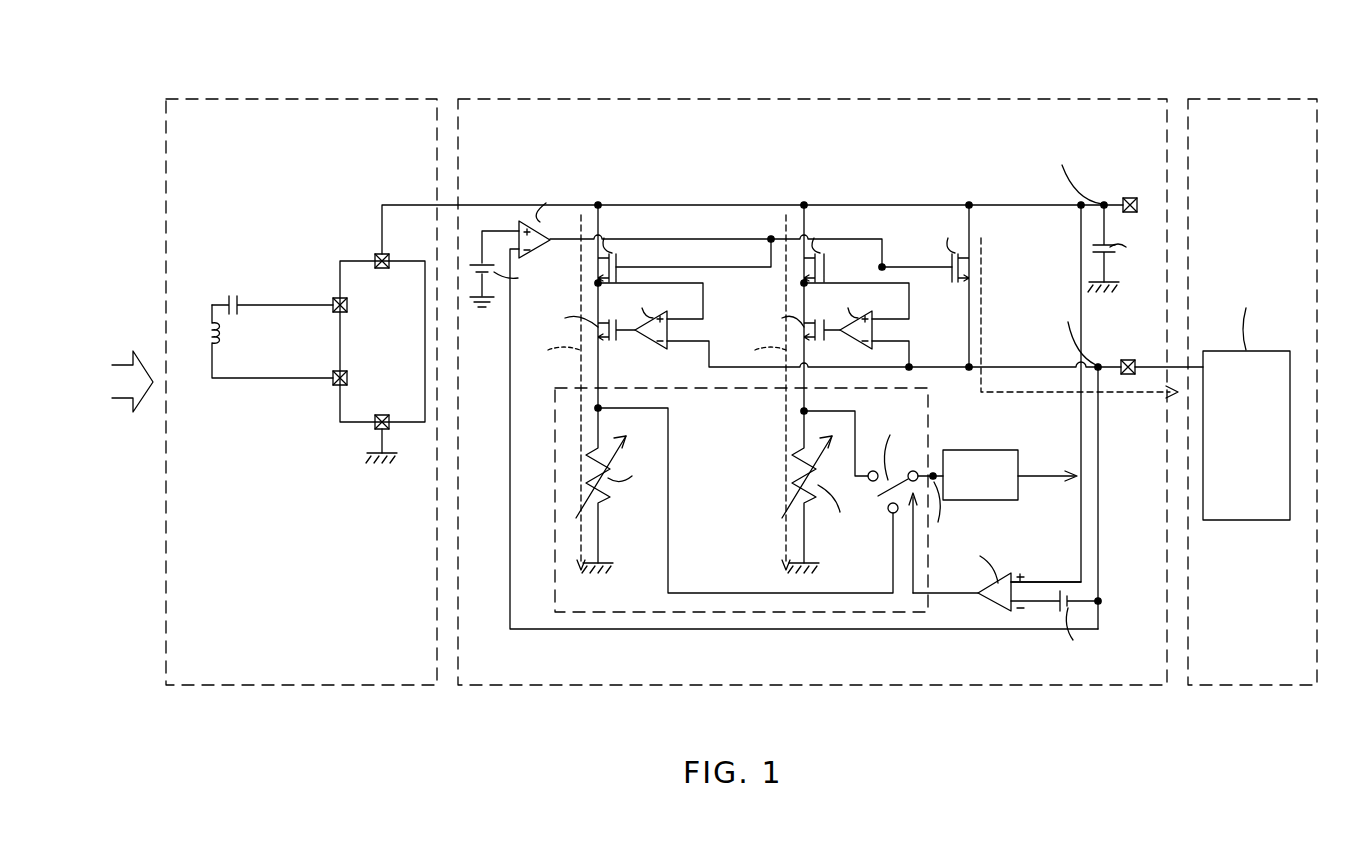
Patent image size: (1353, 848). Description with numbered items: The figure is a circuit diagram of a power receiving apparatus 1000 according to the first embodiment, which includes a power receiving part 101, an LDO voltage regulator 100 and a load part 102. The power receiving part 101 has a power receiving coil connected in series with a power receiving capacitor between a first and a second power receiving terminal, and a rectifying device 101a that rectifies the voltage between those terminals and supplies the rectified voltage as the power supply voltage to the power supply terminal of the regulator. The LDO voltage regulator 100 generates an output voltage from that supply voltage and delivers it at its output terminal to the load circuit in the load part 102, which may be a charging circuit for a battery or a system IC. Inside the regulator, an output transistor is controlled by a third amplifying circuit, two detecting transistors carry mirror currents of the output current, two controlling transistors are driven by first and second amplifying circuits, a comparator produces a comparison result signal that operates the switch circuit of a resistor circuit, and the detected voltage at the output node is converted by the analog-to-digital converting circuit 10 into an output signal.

The power receiving apparatus 1000 is at (714, 378).
The power receiving part 101 is at (311, 99).
The rectifying device 101a is at (352, 258).
The LDO voltage regulator 100 is at (877, 99).
The load part 102 is at (1250, 99).
The analog-to-digital converting circuit 10 is at (1012, 430).